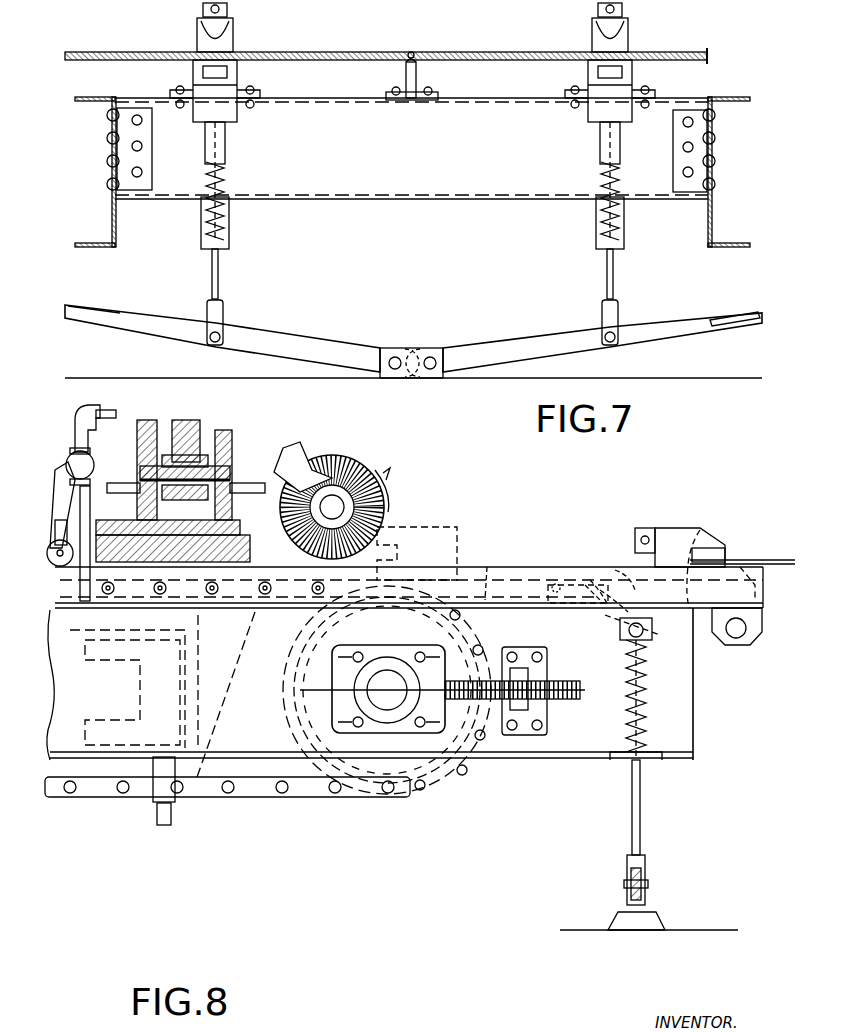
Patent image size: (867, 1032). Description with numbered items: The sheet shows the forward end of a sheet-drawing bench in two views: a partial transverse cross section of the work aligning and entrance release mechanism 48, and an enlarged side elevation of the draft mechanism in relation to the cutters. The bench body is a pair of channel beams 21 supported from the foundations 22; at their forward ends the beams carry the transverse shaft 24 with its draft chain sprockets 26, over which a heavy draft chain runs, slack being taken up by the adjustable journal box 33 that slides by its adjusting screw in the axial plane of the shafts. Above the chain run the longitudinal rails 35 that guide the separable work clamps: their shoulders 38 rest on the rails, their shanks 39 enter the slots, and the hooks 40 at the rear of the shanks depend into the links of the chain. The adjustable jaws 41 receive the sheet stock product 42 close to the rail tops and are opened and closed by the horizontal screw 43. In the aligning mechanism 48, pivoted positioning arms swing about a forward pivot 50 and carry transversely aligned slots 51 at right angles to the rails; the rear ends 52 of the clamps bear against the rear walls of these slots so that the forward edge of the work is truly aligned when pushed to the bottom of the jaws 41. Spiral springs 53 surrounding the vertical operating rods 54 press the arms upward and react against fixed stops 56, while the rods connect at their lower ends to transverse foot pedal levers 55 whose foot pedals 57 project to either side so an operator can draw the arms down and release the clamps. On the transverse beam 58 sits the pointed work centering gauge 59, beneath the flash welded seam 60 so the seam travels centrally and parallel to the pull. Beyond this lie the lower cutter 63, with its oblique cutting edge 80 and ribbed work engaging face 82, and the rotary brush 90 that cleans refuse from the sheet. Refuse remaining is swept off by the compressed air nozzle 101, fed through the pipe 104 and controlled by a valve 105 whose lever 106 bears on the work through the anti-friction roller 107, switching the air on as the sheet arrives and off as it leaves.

In FIG. 8, the channel beams 21 is at (680, 750).
In FIG. 7, the foundations 22 is at (413, 366).
In FIG. 8, the foundations 22 is at (540, 913).
In FIG. 8, the transverse shaft 24 is at (375, 690).
In FIG. 8, the draft chain sprockets 26 is at (356, 798).
In FIG. 8, the adjustable journal box 33 is at (340, 712).
In FIG. 8, the rails 35 is at (487, 566).
In FIG. 8, the shoulders 38 is at (625, 570).
In FIG. 8, the shanks 39 is at (688, 565).
In FIG. 8, the hooks 40 is at (600, 590).
In FIG. 8, the adjustable jaws 41 is at (715, 550).
In FIG. 7, the sheet stock product 42 is at (513, 56).
In FIG. 8, the sheet stock product 42 is at (743, 560).
In FIG. 8, the screw 43 is at (641, 530).
In FIG. 7, the work aligning and entrance release mechanism 48 is at (296, 336).
In FIG. 8, the work aligning and entrance release mechanism 48 is at (583, 801).
In FIG. 8, the pivot 50 is at (742, 638).
In FIG. 8, the transversely aligned slots 51 is at (555, 585).
In FIG. 8, the rear ends of the clamps 52 is at (615, 590).
In FIG. 8, the spiral springs 53 is at (648, 715).
In FIG. 8, the operating rods 54 is at (640, 828).
In FIG. 7, the foot pedal levers 55 is at (640, 335).
In FIG. 8, the fixed stops 56 is at (650, 760).
In FIG. 7, the foot pedals 57 is at (735, 318).
In FIG. 7, the beam 58 is at (411, 148).
In FIG. 8, the beam 58 is at (577, 640).
In FIG. 7, the work centering gauge 59 is at (418, 76).
In FIG. 8, the work centering gauge 59 is at (585, 585).
In FIG. 7, the flash welded seam 60 is at (411, 52).
In FIG. 8, the lower cutter 63 is at (225, 696).
In FIG. 8, the oblique cutting edges 80 is at (182, 491).
In FIG. 8, the work engaging faces 82 is at (248, 580).
In FIG. 8, the rotary brush 90 is at (352, 470).
In FIG. 8, the compressed air nozzle 101 is at (80, 512).
In FIG. 8, the pipe 104 is at (78, 418).
In FIG. 8, the valve 105 is at (92, 470).
In FIG. 8, the lever 106 is at (58, 522).
In FIG. 8, the anti-friction roller 107 is at (50, 562).